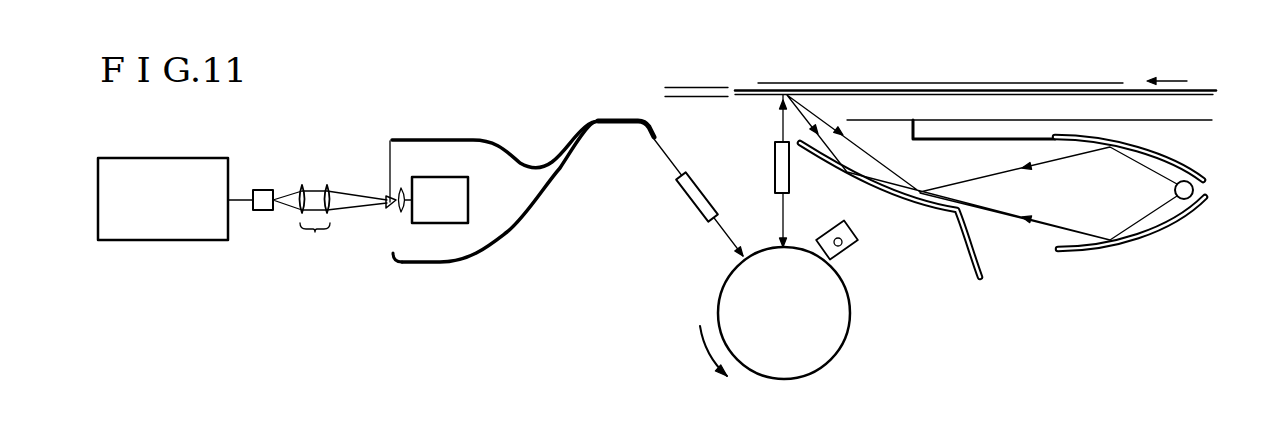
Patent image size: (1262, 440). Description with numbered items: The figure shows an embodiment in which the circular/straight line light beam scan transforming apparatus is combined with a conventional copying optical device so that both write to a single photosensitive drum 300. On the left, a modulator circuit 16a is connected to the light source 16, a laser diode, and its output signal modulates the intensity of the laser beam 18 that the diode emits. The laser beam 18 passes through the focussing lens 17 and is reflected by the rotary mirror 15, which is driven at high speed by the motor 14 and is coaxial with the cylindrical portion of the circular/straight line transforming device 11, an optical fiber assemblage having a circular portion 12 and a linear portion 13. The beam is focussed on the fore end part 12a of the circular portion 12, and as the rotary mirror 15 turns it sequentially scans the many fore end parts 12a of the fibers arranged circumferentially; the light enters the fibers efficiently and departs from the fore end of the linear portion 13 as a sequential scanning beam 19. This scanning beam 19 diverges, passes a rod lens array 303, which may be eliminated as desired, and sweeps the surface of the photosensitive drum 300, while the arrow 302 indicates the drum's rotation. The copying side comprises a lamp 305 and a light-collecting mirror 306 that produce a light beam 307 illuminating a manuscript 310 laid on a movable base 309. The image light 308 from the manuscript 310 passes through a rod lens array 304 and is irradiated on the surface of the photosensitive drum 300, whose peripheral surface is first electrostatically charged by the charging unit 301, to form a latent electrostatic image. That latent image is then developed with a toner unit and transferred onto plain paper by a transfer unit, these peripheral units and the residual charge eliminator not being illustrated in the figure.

The modulator circuit 16a is at (188, 240).
The light source 16 is at (262, 190).
The focussing lens 17 is at (315, 222).
The laser beam 18 is at (386, 194).
The rotary mirror 15 is at (389, 209).
The fore end part 12a is at (390, 140).
The circular portion 12 is at (398, 138).
The circular/straight line transforming device 11 is at (600, 282).
The motor 14 is at (469, 201).
The linear portion 13 is at (661, 131).
The scanning beam 19 is at (666, 159).
The rod lens array 303 is at (689, 203).
The rod lens array 304 is at (775, 160).
The image light 308 is at (784, 216).
The charging unit 301 is at (853, 244).
The photosensitive drum 300 is at (851, 311).
The rotation direction of drum 302 is at (700, 336).
The manuscript 310 is at (1018, 83).
The movable base 309 is at (1217, 90).
The light-collecting mirror 306 is at (1190, 165).
The lamp 305 is at (1194, 191).
The light beam 307 is at (1013, 213).